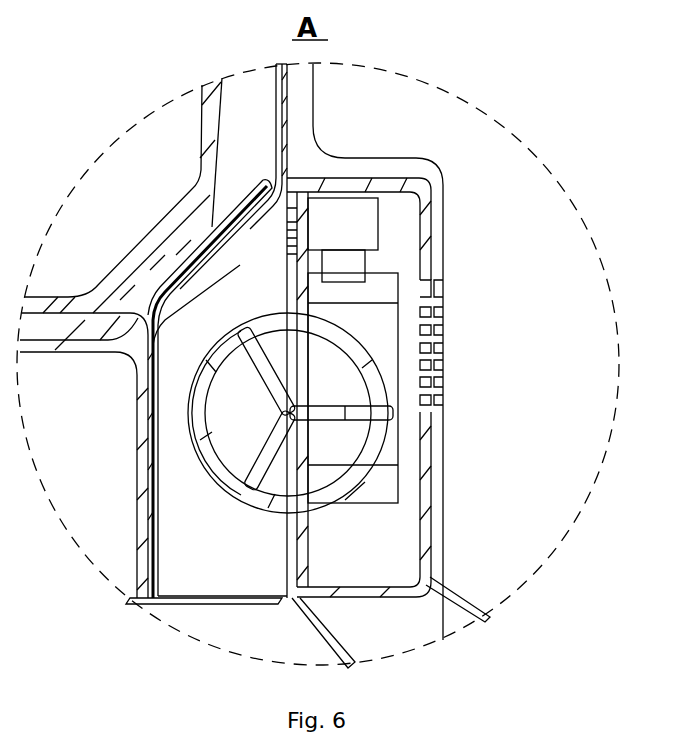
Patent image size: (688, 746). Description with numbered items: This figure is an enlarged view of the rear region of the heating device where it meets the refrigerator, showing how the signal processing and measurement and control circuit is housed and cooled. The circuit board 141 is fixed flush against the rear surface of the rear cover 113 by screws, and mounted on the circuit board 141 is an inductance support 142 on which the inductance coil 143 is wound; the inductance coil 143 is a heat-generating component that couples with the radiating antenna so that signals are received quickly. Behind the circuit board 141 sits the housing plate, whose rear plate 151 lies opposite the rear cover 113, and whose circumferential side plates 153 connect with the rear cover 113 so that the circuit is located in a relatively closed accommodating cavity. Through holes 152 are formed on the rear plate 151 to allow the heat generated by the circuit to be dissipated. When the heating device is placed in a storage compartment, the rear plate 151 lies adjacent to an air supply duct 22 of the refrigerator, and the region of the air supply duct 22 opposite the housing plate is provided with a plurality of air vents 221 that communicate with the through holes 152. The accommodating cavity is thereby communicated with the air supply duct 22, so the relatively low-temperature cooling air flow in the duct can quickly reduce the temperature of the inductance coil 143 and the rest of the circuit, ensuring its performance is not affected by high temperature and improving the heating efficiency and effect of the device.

The rear cover 113 is at (288, 110).
The air supply duct 22 is at (530, 209).
The air vents 221 is at (444, 320).
The through holes 152 is at (429, 370).
The rear plate 151 is at (426, 455).
The circuit board 141 is at (304, 557).
The inductance support 142 is at (262, 470).
The inductance coil 143 is at (226, 479).
The circumferential side plates 153 is at (377, 592).